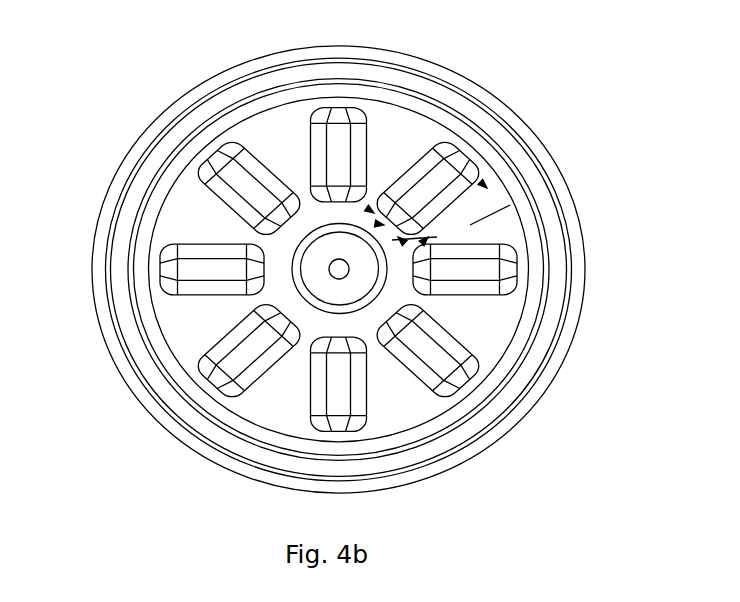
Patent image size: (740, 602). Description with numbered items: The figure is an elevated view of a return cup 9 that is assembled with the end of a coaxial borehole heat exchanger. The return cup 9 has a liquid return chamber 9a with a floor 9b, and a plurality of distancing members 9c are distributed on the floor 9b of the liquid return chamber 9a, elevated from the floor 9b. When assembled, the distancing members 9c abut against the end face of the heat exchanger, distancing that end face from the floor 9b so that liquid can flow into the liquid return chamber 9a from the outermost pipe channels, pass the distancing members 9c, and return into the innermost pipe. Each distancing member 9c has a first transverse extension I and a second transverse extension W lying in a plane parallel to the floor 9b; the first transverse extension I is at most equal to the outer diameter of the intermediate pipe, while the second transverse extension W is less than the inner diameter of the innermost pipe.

The return cup 9 is at (523, 57).
The liquid return chamber 9a is at (197, 323).
The floor 9b is at (460, 213).
The distancing member 9c is at (443, 168).
The second transverse extension W is at (362, 205).
The first transverse extension I is at (490, 227).